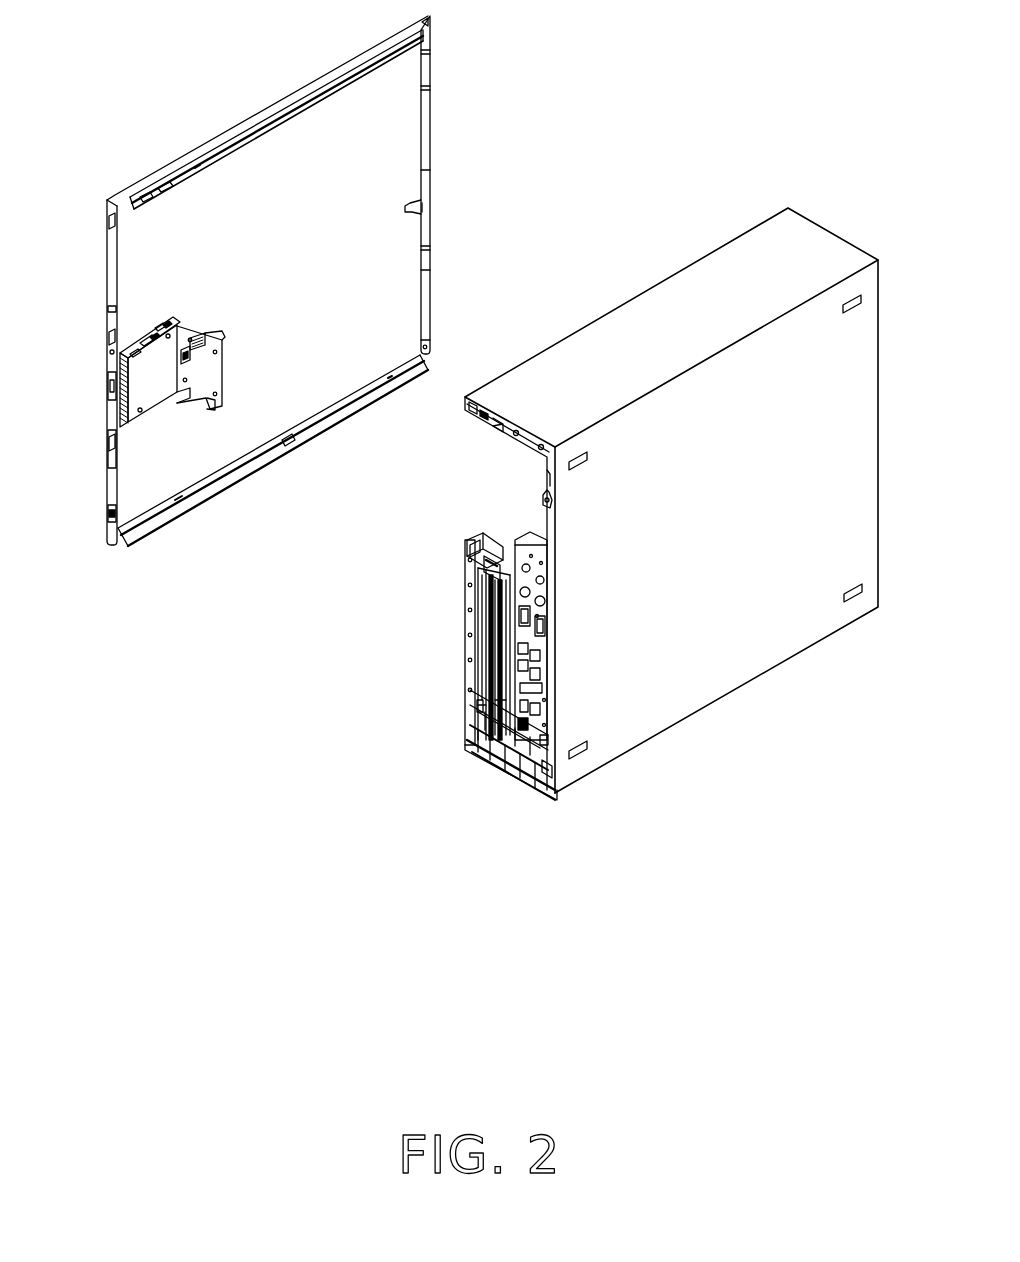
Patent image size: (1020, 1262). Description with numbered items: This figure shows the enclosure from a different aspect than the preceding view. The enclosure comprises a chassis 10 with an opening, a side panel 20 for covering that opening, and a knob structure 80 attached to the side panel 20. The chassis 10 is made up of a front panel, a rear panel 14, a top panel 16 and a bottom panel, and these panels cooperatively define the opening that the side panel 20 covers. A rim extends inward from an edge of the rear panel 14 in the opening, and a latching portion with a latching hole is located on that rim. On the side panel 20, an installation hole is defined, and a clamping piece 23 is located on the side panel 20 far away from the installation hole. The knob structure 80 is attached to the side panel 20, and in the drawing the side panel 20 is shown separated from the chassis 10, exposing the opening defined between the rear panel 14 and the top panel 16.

The chassis 10 is at (632, 520).
The rear panel 14 is at (490, 643).
The top panel 16 is at (635, 328).
The side panel 20 is at (292, 277).
The clamping piece 23 is at (427, 137).
The knob structure 80 is at (148, 372).